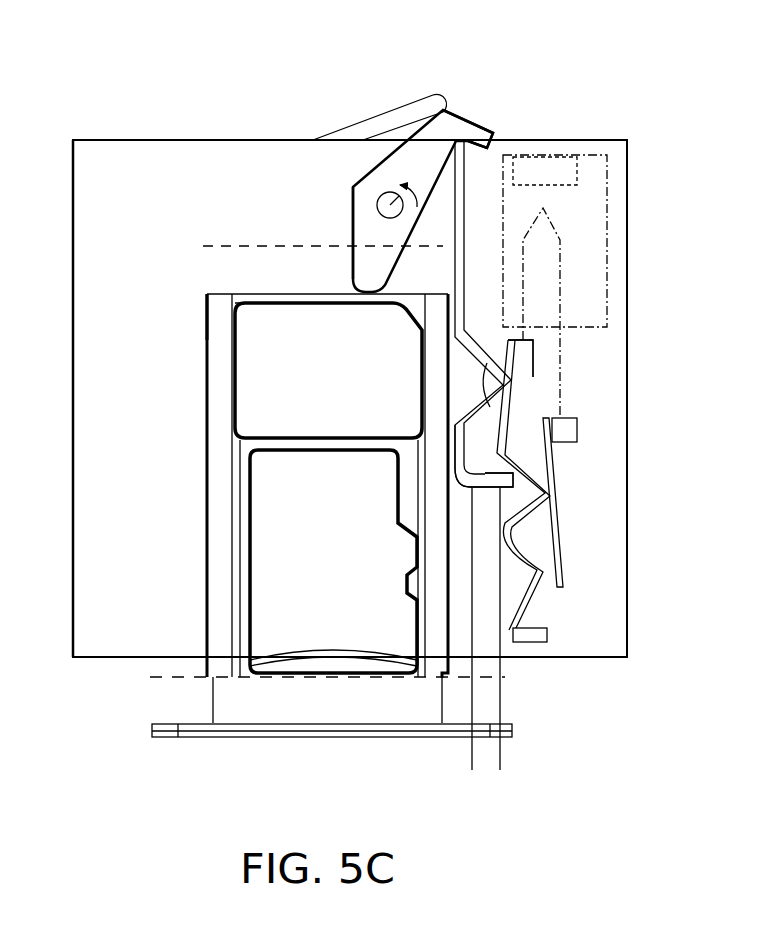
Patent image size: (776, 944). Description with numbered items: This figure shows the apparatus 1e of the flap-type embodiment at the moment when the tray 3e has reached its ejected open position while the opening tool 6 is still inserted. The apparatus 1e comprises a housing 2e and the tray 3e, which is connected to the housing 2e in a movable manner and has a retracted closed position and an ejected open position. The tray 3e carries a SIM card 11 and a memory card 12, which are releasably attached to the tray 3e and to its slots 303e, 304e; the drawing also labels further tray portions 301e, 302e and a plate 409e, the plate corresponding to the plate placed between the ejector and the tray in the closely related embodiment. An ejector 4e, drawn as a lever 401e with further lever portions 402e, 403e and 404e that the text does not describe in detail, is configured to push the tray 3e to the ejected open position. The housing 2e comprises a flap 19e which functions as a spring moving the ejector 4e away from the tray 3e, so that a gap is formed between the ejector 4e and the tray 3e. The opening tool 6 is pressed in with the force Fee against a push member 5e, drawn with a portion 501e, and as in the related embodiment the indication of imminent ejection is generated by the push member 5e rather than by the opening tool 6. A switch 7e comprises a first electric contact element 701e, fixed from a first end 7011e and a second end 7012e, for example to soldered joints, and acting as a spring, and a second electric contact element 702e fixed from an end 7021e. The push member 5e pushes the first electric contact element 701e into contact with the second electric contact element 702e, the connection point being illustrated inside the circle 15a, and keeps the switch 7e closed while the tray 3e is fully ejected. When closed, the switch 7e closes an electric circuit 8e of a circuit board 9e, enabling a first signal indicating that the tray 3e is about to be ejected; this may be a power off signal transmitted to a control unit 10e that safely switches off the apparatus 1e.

The apparatus 1e is at (268, 63).
The housing 2e is at (624, 137).
The tray 3e is at (172, 292).
The ejector 4e is at (305, 195).
The ejection rod 5e is at (466, 293).
The opening tool 6 is at (490, 755).
The detection switch 7e is at (589, 438).
The signal path 8e is at (560, 287).
The control unit 9e is at (503, 155).
The I/O interface 10e is at (565, 168).
The SIM card 11 is at (298, 317).
The memory card 12 is at (287, 460).
The circle 15a is at (521, 385).
The flap 19e is at (377, 127).
The tray bottom 301e is at (158, 724).
The tray flange 302e is at (505, 729).
The first card slot 303e is at (267, 305).
The second card slot 304e is at (250, 575).
The lever arm 401e is at (353, 204).
The pivot 402e is at (410, 190).
The pivot axis line 403e is at (365, 267).
The hook 404e is at (443, 117).
The tray side wall 409e is at (222, 290).
The rod bracket 501e is at (462, 477).
The switch lever 701e is at (520, 398).
The switch plate 702e is at (558, 507).
The lever end 7011e is at (533, 340).
The lever foot 7012e is at (547, 635).
The contact block 7021e is at (577, 430).
The ejection force Fee is at (494, 772).